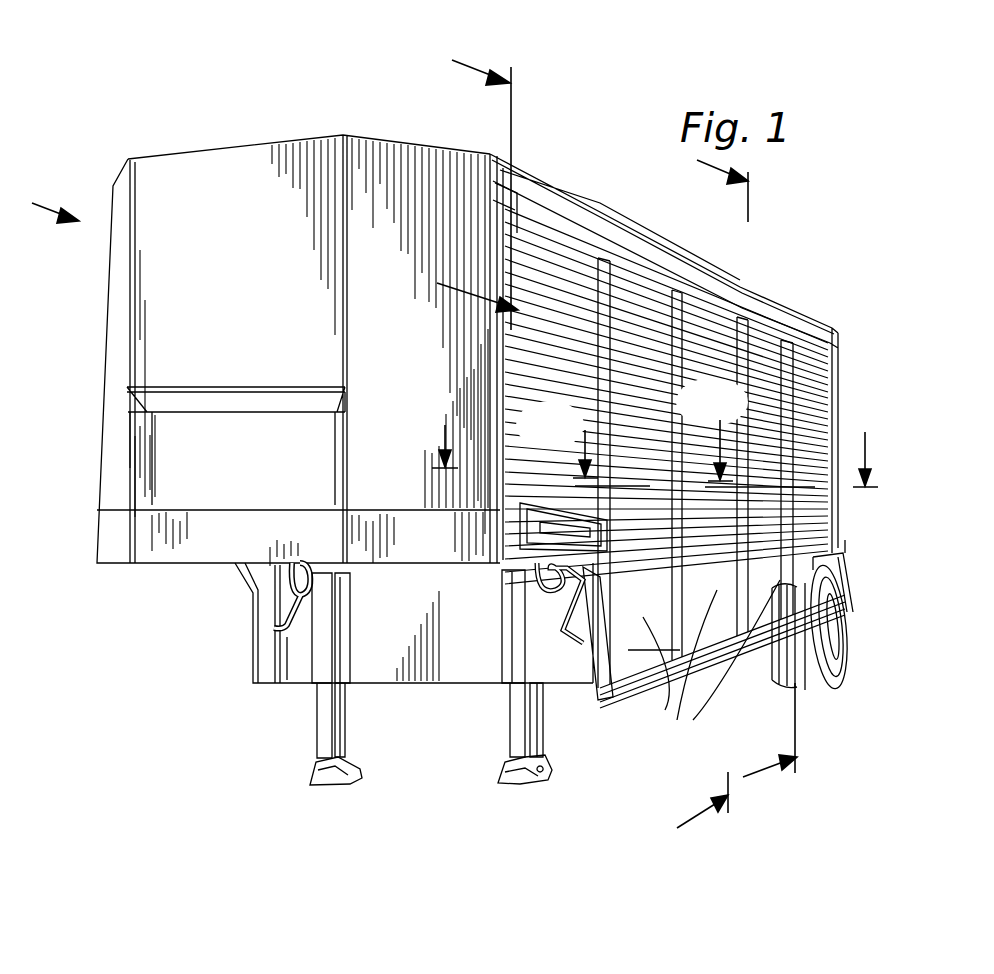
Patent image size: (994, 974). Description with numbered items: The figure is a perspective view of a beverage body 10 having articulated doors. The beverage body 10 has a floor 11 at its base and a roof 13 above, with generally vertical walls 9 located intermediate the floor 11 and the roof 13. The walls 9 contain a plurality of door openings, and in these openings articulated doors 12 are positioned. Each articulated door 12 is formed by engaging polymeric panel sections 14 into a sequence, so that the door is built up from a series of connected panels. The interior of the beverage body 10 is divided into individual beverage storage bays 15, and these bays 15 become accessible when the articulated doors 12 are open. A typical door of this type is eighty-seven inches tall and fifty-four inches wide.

The generally vertical walls 9 is at (370, 165).
The beverage body 10 is at (205, 613).
The floor 11 is at (421, 690).
The articulated doors 12 is at (633, 275).
The roof 13 is at (519, 158).
The polymeric panel sections 14 is at (826, 386).
The beverage storage bays 15 is at (676, 712).